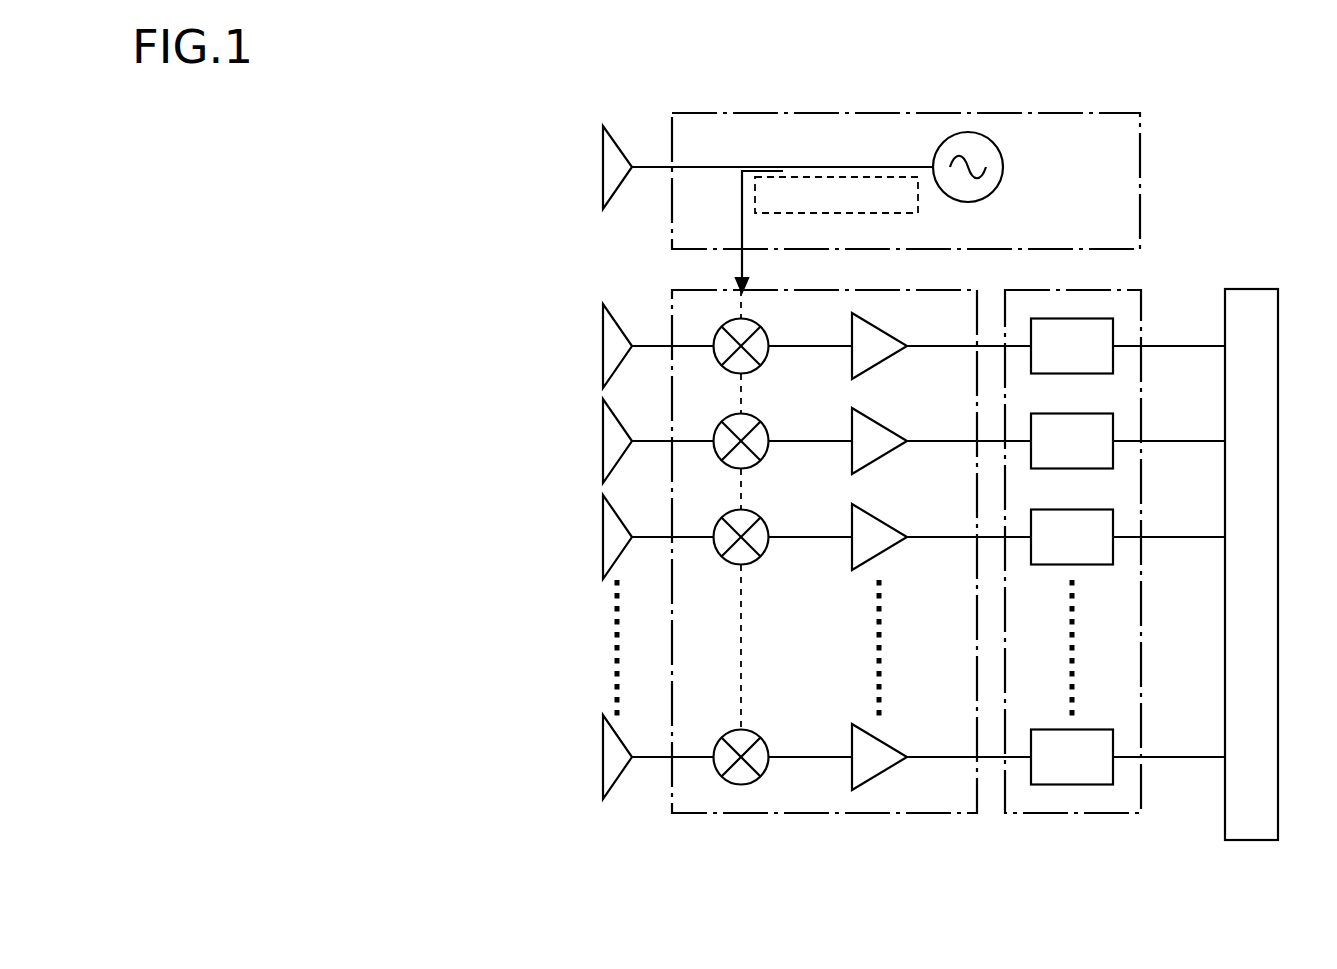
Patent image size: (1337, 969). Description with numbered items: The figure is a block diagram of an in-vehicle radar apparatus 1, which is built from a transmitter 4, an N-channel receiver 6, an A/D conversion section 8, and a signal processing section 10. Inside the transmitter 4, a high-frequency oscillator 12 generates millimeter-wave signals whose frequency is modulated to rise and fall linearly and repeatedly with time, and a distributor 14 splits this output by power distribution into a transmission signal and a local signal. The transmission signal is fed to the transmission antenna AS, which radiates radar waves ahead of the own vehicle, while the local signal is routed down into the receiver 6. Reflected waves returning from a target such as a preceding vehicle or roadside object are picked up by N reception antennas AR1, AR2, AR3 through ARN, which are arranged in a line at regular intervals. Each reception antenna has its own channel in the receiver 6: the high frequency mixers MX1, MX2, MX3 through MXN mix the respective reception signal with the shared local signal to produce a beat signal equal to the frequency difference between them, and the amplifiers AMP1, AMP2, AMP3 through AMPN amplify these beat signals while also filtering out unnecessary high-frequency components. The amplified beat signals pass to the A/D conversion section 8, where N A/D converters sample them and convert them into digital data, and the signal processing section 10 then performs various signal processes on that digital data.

The in-vehicle radar apparatus 1 is at (338, 160).
The transmitter 4 is at (848, 113).
The receiver 6 is at (806, 813).
The A/D conversion section 8 is at (1028, 813).
The signal processing section 10 is at (1278, 749).
The high-frequency oscillator 12 is at (1025, 216).
The distributor 14 is at (827, 231).
The transmission antenna AS is at (603, 176).
The reception antenna AR1 is at (603, 350).
The reception antenna AR2 is at (603, 445).
The reception antenna AR3 is at (603, 541).
The reception antenna ARN is at (603, 761).
The high frequency mixer MX1 is at (762, 328).
The high frequency mixer MX2 is at (762, 423).
The high frequency mixer MX3 is at (762, 519).
The high frequency mixer MXN is at (762, 739).
The amplifier AMP1 is at (868, 320).
The amplifier AMP2 is at (868, 415).
The amplifier AMP3 is at (868, 511).
The amplifier AMPN is at (868, 731).